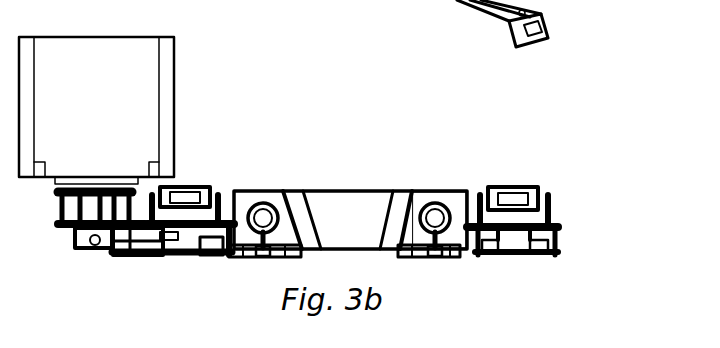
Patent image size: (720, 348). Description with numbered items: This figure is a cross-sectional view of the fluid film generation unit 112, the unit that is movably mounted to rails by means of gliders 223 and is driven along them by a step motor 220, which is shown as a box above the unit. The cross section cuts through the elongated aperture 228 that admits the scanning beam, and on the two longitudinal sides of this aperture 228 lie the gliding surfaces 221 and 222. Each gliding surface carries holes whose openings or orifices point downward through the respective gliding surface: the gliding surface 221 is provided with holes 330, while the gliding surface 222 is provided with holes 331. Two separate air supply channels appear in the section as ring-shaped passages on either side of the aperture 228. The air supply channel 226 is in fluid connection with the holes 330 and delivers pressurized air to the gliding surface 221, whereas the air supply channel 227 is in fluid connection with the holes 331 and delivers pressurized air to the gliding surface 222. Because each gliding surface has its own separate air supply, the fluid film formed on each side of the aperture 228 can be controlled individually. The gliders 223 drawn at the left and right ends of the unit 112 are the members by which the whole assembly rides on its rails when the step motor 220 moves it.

The step motor 220 is at (96, 92).
The elongated aperture 228 is at (350, 167).
The air supply channel 227 is at (231, 183).
The air supply channel 226 is at (404, 191).
The fluid film generation unit 112 is at (473, 196).
The gliders 223 is at (333, 255).
The gliding surface 222 is at (224, 276).
The holes 331 is at (212, 287).
The holes 330 is at (468, 265).
The gliding surface 221 is at (447, 286).